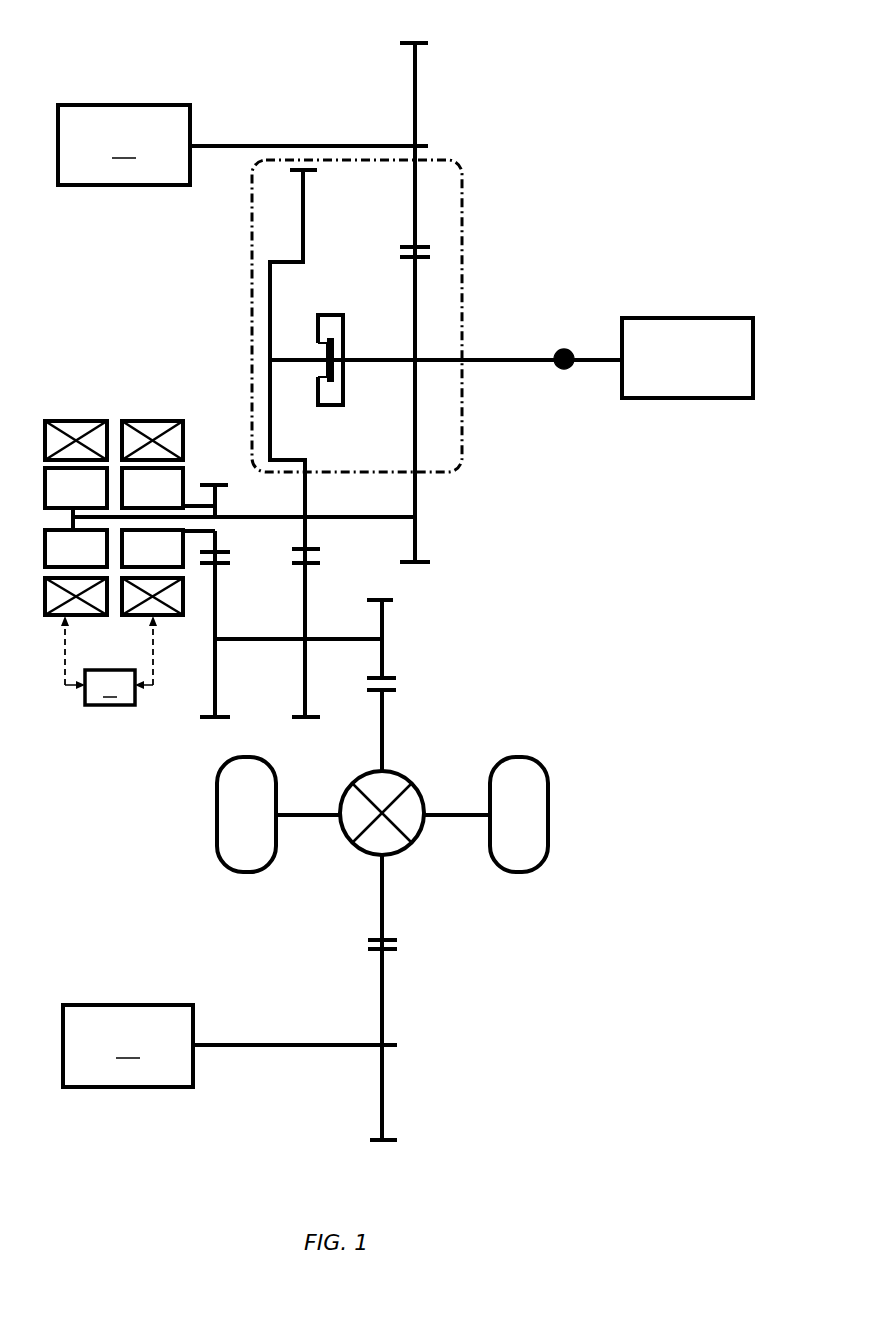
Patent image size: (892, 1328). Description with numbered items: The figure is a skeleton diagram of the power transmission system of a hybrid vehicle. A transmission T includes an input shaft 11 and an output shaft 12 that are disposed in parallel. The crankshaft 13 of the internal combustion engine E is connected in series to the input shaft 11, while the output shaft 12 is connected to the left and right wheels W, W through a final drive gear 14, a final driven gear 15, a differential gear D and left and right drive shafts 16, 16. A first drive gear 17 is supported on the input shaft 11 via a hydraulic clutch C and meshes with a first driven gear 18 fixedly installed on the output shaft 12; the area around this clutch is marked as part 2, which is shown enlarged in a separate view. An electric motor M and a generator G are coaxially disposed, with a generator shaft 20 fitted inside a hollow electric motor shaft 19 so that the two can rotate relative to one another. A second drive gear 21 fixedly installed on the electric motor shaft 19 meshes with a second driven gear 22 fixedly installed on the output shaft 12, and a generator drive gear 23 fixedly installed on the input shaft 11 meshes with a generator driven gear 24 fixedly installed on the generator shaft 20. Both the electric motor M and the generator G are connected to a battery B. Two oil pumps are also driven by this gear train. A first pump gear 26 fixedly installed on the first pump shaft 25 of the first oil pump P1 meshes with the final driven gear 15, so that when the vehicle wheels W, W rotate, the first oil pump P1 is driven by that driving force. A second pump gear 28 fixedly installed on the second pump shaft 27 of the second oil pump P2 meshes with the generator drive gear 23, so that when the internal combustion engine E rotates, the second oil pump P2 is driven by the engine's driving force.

The part 2 is at (462, 222).
The input shaft 11 is at (513, 362).
The output shaft 12 is at (340, 636).
The crankshaft 13 is at (592, 366).
The final drive gear 14 is at (393, 600).
The final driven gear 15 is at (397, 687).
The drive shafts 16 is at (456, 810).
The first drive gear 17 is at (298, 172).
The first driven gear 18 is at (313, 720).
The electric motor shaft 19 is at (218, 512).
The generator shaft 20 is at (362, 515).
The second drive gear 21 is at (222, 483).
The second driven gear 22 is at (204, 722).
The generator drive gear 23 is at (433, 257).
The generator driven gear 24 is at (428, 565).
The first pump shaft 25 is at (255, 1043).
The first pump gear 26 is at (395, 1143).
The second pump shaft 27 is at (362, 146).
The second pump gear 28 is at (428, 43).
The first oil pump P1 is at (128, 1046).
The second oil pump P2 is at (124, 145).
The internal combustion engine E is at (687, 358).
The transmission T is at (211, 326).
The hydraulic clutch C is at (332, 316).
The generator G is at (81, 420).
The electric motor M is at (158, 420).
The battery B is at (109, 660).
The differential gear D is at (402, 851).
The wheels W is at (528, 757).